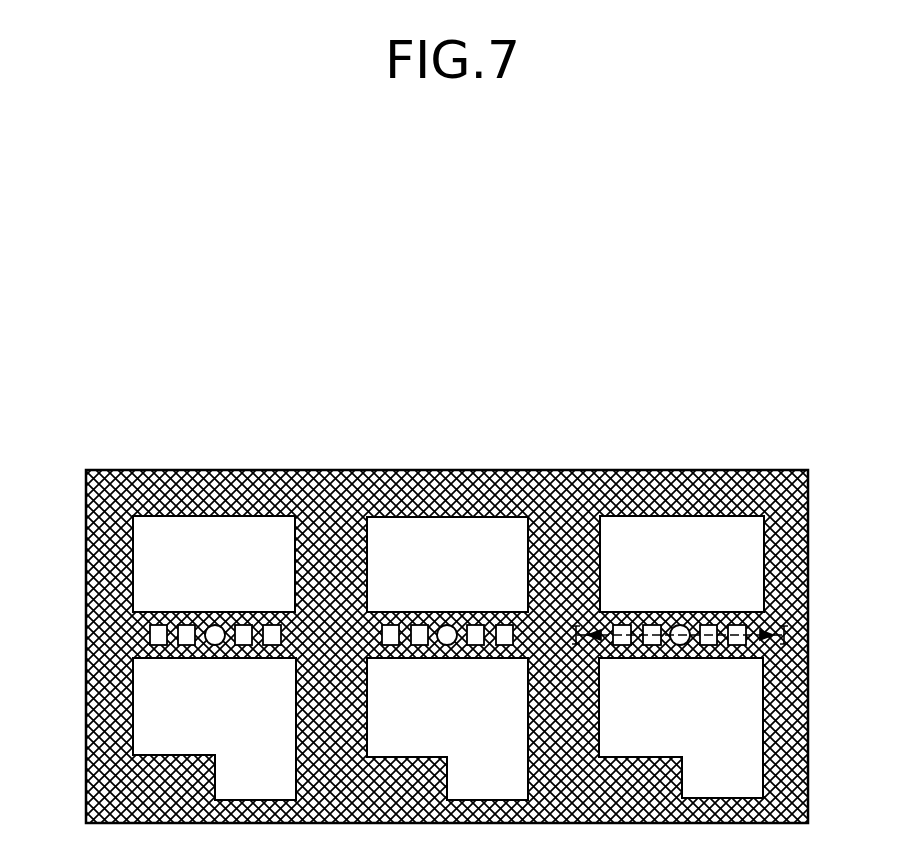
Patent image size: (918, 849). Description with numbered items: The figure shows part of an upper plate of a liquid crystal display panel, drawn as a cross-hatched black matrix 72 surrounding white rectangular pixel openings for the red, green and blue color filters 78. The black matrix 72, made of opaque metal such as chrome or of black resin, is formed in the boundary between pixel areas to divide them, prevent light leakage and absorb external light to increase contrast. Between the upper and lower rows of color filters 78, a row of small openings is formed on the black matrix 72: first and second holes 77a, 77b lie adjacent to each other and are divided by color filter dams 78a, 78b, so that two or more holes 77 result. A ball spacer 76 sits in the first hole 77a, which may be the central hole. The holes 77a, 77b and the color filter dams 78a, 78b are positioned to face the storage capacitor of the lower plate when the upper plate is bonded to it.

The black matrix 72 is at (788, 792).
The ball spacer 76 is at (214, 624).
The holes 77 is at (275, 697).
The first hole 77a is at (220, 647).
The second hole 77b is at (170, 647).
The color filters 78 is at (755, 672).
The color filter dam 78a is at (178, 624).
The color filter dam 78b is at (148, 637).